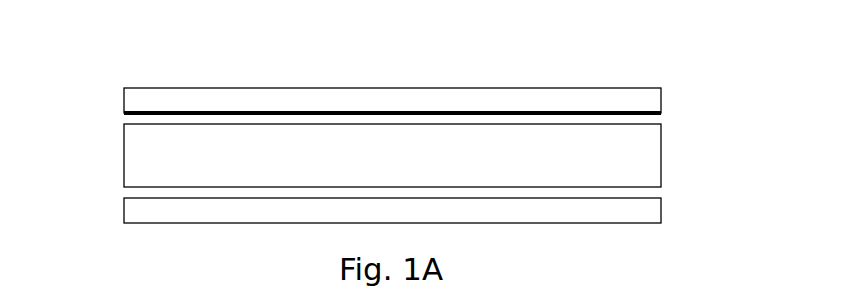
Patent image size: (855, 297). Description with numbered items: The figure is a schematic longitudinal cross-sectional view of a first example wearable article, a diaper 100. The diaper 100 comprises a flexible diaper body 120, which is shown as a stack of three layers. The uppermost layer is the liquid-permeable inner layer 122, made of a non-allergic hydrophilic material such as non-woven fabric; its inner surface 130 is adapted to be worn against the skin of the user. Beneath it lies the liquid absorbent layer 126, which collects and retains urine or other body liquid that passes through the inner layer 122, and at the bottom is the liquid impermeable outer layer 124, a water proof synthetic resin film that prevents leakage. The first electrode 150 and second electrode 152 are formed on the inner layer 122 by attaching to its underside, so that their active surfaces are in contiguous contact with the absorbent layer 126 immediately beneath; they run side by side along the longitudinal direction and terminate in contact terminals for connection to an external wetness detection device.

The diaper 100 is at (404, 117).
The flexible diaper body 120 is at (404, 117).
The liquid-permeable inner layer 122 is at (392, 100).
The liquid impermeable outer layer 124 is at (392, 210).
The liquid absorbent layer 126 is at (392, 155).
The inner surface 130 is at (242, 87).
The first electrode 150 is at (667, 116).
The second electrode 152 is at (688, 89).